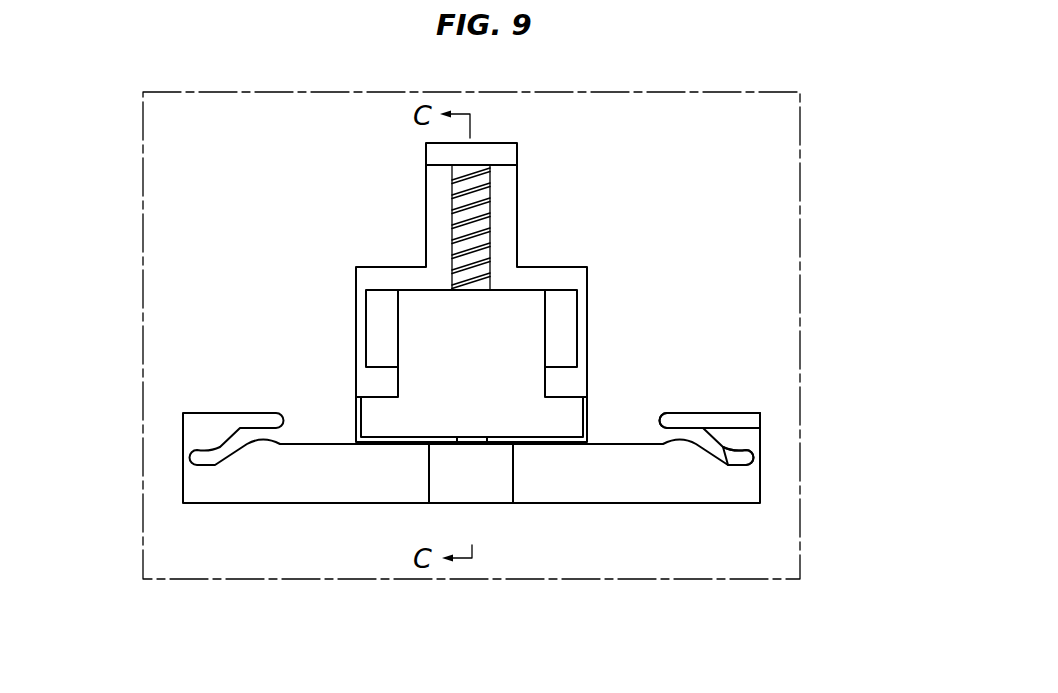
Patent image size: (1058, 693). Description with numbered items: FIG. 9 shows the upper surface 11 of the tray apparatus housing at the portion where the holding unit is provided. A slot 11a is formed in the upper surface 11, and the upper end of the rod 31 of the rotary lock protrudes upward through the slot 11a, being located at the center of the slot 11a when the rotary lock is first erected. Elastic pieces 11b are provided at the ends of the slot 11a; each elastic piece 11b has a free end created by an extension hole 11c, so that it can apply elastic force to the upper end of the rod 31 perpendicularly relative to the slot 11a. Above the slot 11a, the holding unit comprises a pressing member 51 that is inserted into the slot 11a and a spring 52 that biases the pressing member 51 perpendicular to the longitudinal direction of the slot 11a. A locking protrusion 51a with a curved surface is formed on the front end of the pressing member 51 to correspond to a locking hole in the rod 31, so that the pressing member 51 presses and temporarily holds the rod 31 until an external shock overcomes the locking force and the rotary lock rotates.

The upper surface 11 is at (212, 238).
The slot 11a is at (635, 483).
The elastic piece 11b is at (727, 453).
The extension hole 11c is at (743, 430).
The rod 31 is at (460, 478).
The pressing member 51 is at (522, 343).
The locking protrusion 51a is at (480, 448).
The spring 52 is at (487, 220).